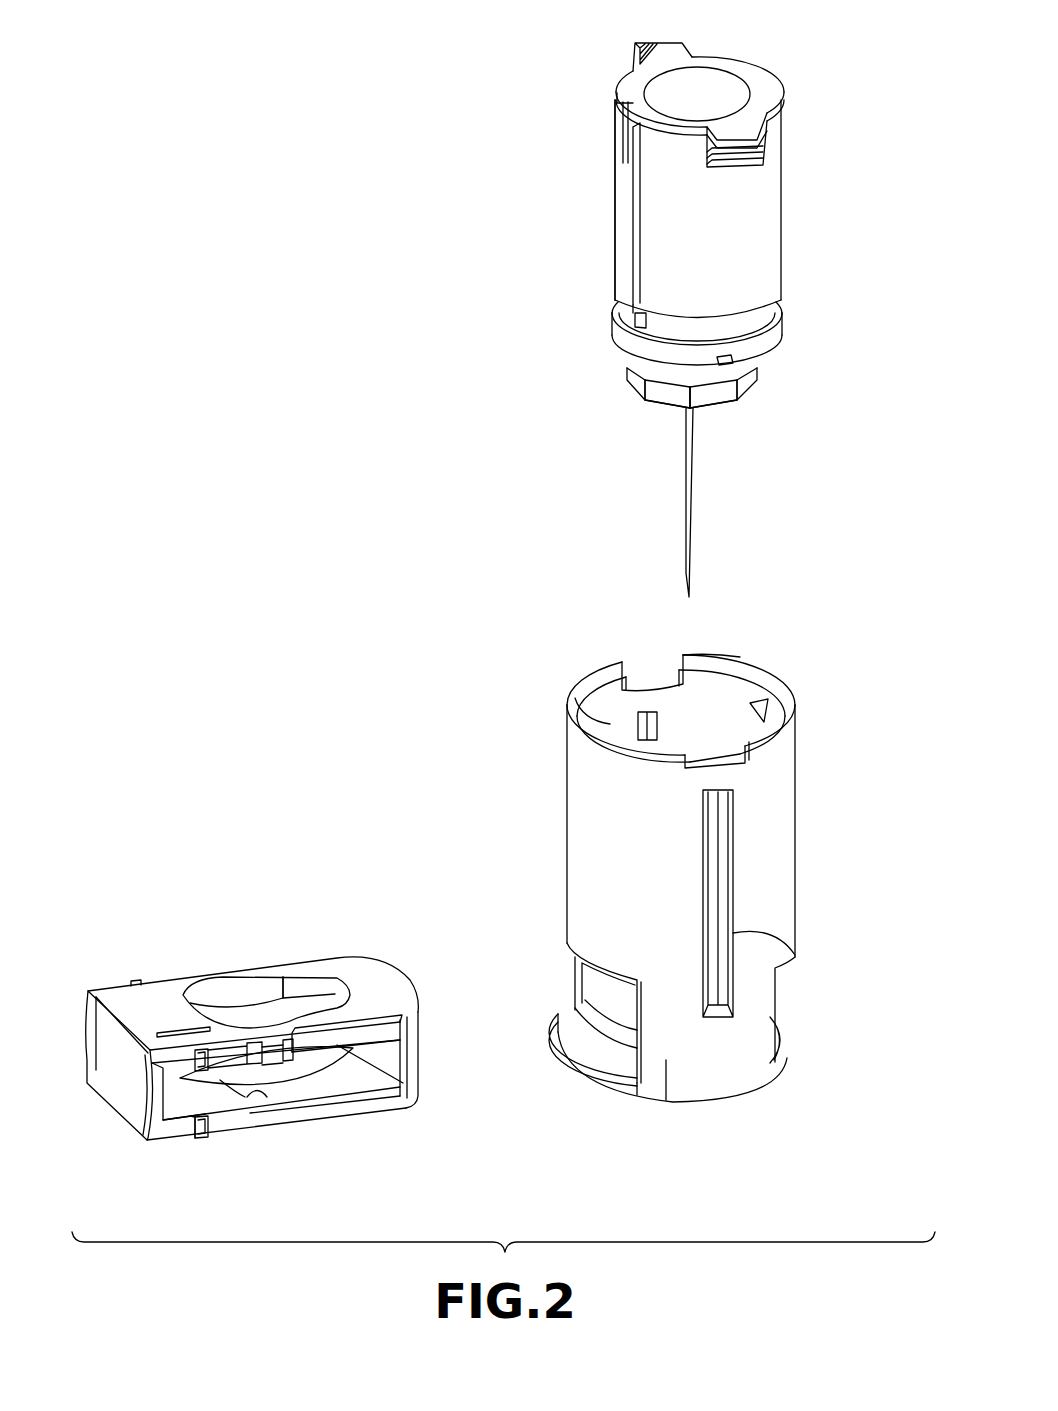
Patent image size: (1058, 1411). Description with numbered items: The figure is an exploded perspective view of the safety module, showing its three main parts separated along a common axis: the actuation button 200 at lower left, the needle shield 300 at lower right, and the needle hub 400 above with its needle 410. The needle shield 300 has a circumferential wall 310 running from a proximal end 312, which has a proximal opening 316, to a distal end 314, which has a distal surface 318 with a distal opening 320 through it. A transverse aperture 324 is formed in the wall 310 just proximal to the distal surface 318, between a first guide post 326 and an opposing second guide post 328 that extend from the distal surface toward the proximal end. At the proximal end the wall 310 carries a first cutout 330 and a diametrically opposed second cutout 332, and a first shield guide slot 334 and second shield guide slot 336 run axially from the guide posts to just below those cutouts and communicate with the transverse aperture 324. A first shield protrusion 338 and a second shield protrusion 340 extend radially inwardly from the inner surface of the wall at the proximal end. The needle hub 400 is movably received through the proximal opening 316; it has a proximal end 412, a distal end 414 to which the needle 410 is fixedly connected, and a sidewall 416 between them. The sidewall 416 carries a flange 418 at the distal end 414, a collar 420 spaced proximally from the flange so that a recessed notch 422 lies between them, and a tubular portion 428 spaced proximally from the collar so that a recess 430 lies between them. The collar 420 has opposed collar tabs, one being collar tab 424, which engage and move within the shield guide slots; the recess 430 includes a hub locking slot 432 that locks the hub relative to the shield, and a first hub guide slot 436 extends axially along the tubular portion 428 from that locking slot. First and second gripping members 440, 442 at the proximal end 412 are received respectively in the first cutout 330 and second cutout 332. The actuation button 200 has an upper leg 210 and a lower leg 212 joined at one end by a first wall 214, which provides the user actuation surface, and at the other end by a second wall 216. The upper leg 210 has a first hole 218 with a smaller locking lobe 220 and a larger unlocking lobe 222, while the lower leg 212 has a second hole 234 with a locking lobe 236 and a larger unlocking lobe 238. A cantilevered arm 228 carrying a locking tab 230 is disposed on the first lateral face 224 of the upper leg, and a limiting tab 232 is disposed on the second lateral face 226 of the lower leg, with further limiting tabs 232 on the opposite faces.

The actuation button 200 is at (190, 840).
The upper leg 210 is at (115, 985).
The lower leg 212 is at (165, 1137).
The first wall 214 is at (105, 1037).
The second wall 216 is at (420, 1052).
The first hole 218 is at (248, 1005).
The locking lobe 220 is at (340, 995).
The unlocking lobe 222 is at (199, 1046).
The first lateral face 224 is at (128, 1073).
The second lateral face 226 is at (328, 1112).
The cantilevered arm 228 is at (230, 1052).
The locking tab 230 is at (262, 1065).
The limiting tab 232 is at (141, 980).
The second hole 234 is at (255, 1092).
The locking lobe 236 is at (348, 1062).
The unlocking lobe 238 is at (200, 1120).
The needle shield 300 is at (468, 632).
The circumferential wall 310 is at (796, 857).
The proximal end 312 is at (758, 662).
The distal end 314 is at (717, 1100).
The proximal opening 316 is at (710, 695).
The distal surface 318 is at (784, 1060).
The distal opening 320 is at (618, 1053).
The transverse aperture 324 is at (777, 987).
The first guide post 326 is at (664, 1075).
The second guide post 328 is at (590, 970).
The first cutout 330 is at (748, 757).
The second cutout 332 is at (628, 672).
The first shield guide slot 334 is at (718, 935).
The second shield guide slot 336 is at (647, 713).
The first shield protrusion 338 is at (760, 702).
The second shield protrusion 340 is at (578, 700).
The needle hub 400 is at (453, 147).
The needle 410 is at (684, 535).
The proximal end 412 is at (720, 82).
The distal end 414 is at (750, 393).
The sidewall 416 is at (783, 243).
The flange 418 is at (655, 397).
The collar 420 is at (622, 340).
The recessed notch 422 is at (698, 378).
The collar tab 424 is at (733, 359).
The tubular portion 428 is at (782, 172).
The recess 430 is at (760, 319).
The hub locking slot 432 is at (640, 322).
The first hub guide slot 436 is at (637, 197).
The first gripping member 440 is at (762, 155).
The second gripping member 442 is at (668, 48).